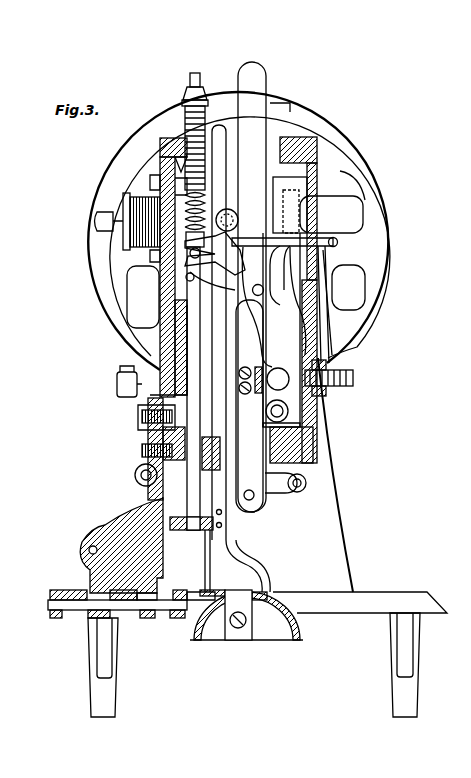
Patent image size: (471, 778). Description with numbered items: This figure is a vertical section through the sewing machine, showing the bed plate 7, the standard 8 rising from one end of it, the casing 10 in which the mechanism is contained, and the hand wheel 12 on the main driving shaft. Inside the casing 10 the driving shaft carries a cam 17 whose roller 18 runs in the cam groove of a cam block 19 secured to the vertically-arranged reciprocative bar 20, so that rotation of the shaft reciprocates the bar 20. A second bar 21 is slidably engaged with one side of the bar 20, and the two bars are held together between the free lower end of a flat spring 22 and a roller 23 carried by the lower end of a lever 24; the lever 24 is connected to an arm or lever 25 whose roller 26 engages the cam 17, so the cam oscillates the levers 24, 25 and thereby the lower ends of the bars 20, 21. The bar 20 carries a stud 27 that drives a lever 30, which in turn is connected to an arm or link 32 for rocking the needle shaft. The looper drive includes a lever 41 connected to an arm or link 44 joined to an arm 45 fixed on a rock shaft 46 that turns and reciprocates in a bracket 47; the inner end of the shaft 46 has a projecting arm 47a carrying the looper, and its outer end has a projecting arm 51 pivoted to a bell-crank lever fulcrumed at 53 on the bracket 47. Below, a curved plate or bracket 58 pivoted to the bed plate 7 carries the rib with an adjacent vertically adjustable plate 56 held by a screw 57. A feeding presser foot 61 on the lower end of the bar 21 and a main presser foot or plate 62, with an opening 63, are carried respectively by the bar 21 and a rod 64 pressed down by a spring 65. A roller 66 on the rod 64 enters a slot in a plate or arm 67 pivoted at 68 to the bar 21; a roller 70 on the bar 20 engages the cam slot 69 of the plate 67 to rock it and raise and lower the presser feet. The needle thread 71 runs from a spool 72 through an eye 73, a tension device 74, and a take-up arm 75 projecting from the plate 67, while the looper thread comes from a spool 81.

The bed plate 7 is at (372, 592).
The standard 8 is at (328, 486).
The casing 10 is at (326, 348).
The hand wheel 12 is at (395, 282).
The cam 17 is at (285, 275).
The roller 18 is at (278, 317).
The cam block 19 is at (285, 205).
The reciprocative bar 20 is at (270, 76).
The bar 21 is at (220, 125).
The flat spring 22 is at (160, 365).
The roller 23 is at (283, 415).
The lever 24 is at (290, 417).
The arm or lever 25 is at (215, 270).
The roller 26 is at (188, 276).
The stud 27 is at (248, 415).
The lever 30 is at (140, 425).
The arm or link 32 is at (117, 404).
The lever 41 is at (140, 488).
The arm or link 44 is at (136, 470).
The arm 45 is at (128, 618).
The rock shaft 46 is at (161, 618).
The bracket 47 is at (120, 520).
The projecting arm 47a is at (180, 618).
The projecting arm 51 is at (68, 618).
The fulcrum 53 is at (89, 550).
The vertically adjustable plate 56 is at (250, 640).
The screw 57 is at (238, 628).
The curved plate or bracket 58 is at (290, 635).
The feeding presser foot 61 is at (268, 562).
The main presser foot or plate 62 is at (272, 590).
The opening 63 is at (213, 592).
The rod 64 is at (195, 73).
The spring 65 is at (172, 165).
The roller 66 is at (150, 256).
The plate or arm 67 is at (275, 310).
The pivot 68 is at (222, 210).
The cam slot 69 is at (285, 337).
The roller 70 is at (264, 289).
The needle thread 71 is at (327, 300).
The spool 72 is at (292, 103).
The eye 73 is at (360, 158).
The tension device 74 is at (355, 392).
The take-up arm 75 is at (336, 240).
The spool 81 is at (140, 207).